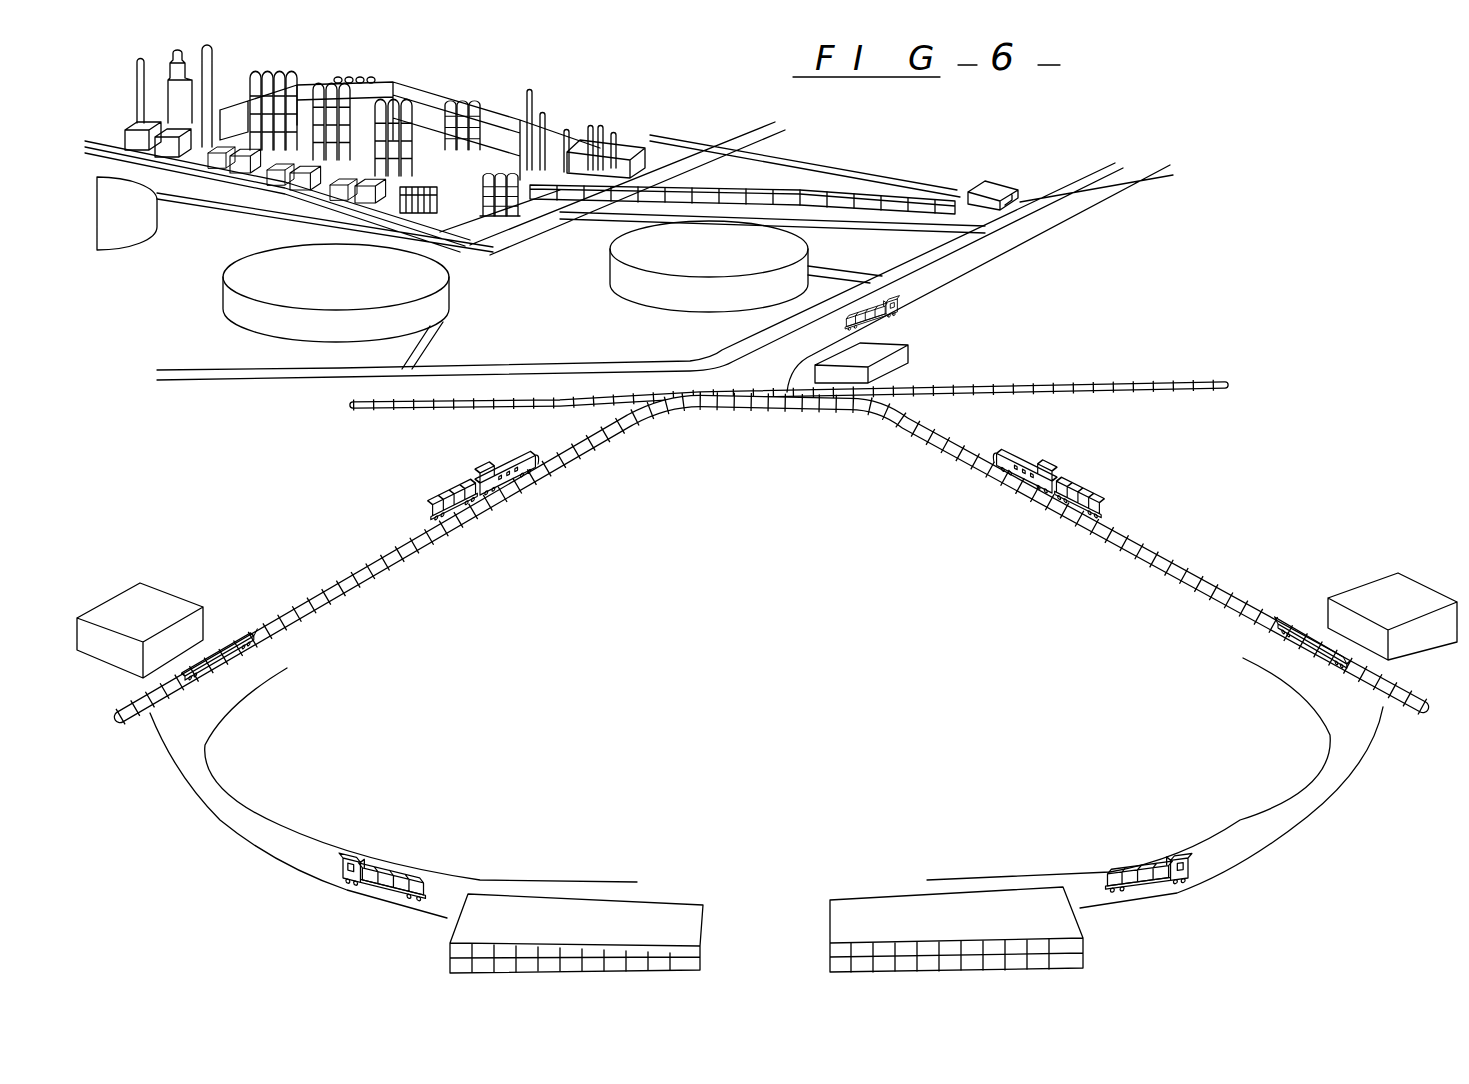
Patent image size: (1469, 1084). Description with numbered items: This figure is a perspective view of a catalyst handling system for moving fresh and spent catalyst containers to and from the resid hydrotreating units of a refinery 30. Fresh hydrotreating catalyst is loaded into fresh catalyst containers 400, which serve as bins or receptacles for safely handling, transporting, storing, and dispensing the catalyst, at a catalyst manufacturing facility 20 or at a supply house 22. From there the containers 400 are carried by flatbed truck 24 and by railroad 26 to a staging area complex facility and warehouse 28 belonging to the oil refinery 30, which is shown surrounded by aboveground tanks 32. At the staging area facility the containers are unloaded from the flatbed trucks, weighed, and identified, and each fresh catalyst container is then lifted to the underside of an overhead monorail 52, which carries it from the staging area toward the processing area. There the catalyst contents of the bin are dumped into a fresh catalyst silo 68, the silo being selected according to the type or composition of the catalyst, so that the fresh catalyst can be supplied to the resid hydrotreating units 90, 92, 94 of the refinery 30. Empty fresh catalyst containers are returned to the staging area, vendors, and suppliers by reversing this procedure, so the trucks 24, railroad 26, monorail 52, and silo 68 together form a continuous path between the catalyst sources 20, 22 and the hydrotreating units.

The catalyst manufacturing facility 20 is at (663, 900).
The supply house 22 is at (837, 898).
The flatbed truck 24 is at (898, 306).
The railroad 26 is at (503, 467).
The staging area complex facility and warehouse 28 is at (987, 182).
The refinery 30 is at (535, 143).
The aboveground tanks 32 is at (455, 300).
The overhead monorail 52 is at (742, 192).
The fresh catalyst silo 68 is at (493, 185).
The resid hydrotreating unit 90 is at (394, 95).
The resid hydrotreating unit 92 is at (328, 85).
The resid hydrotreating unit 94 is at (265, 78).
The fresh catalyst container 400 is at (457, 490).